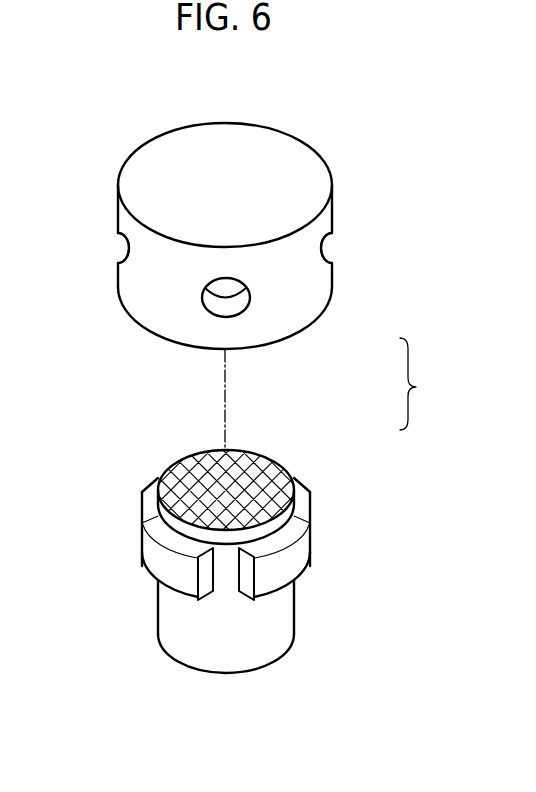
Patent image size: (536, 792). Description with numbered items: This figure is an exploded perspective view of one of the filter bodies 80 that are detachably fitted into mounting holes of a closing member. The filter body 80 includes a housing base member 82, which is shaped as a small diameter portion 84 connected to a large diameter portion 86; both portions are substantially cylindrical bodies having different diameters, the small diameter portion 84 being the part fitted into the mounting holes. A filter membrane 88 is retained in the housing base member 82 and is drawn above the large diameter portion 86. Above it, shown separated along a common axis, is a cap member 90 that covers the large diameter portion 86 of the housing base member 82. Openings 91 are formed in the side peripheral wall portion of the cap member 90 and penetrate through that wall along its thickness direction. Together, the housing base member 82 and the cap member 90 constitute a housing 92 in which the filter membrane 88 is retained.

The filter body 80 is at (67, 137).
The housing base member 82 is at (260, 541).
The small diameter portion 84 is at (272, 628).
The large diameter portion 86 is at (292, 564).
The filter membrane 88 is at (195, 472).
The cap member 90 is at (310, 327).
The opening 91 is at (121, 246).
The housing 92 is at (423, 384).